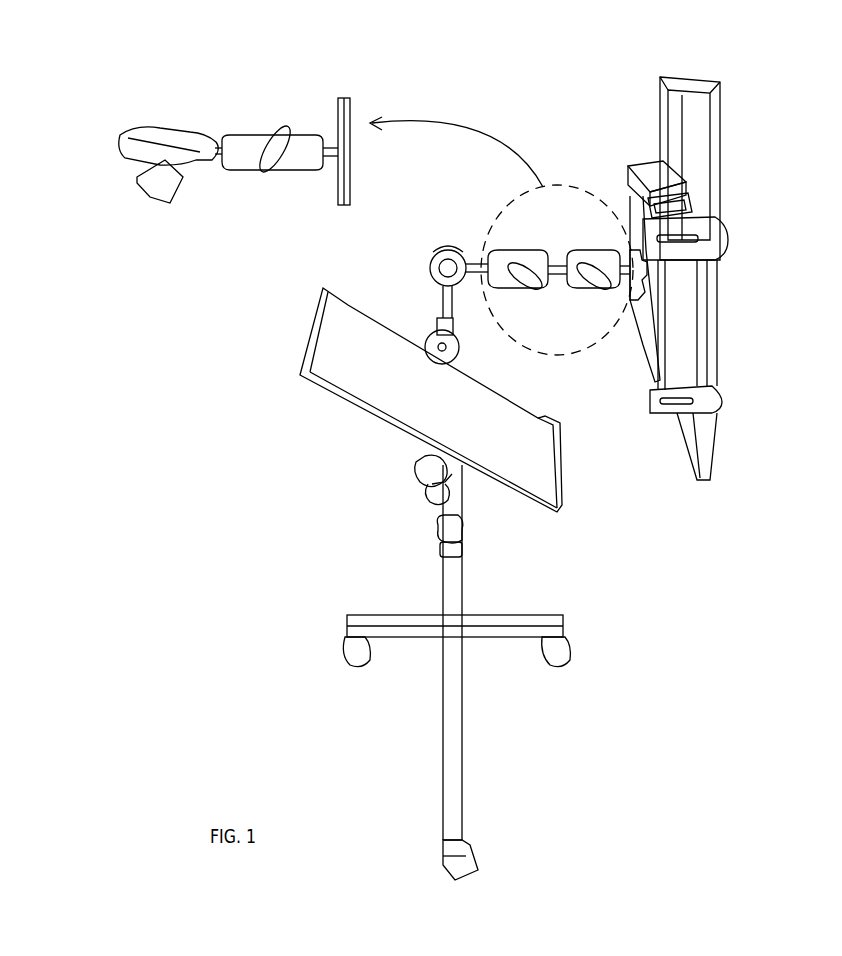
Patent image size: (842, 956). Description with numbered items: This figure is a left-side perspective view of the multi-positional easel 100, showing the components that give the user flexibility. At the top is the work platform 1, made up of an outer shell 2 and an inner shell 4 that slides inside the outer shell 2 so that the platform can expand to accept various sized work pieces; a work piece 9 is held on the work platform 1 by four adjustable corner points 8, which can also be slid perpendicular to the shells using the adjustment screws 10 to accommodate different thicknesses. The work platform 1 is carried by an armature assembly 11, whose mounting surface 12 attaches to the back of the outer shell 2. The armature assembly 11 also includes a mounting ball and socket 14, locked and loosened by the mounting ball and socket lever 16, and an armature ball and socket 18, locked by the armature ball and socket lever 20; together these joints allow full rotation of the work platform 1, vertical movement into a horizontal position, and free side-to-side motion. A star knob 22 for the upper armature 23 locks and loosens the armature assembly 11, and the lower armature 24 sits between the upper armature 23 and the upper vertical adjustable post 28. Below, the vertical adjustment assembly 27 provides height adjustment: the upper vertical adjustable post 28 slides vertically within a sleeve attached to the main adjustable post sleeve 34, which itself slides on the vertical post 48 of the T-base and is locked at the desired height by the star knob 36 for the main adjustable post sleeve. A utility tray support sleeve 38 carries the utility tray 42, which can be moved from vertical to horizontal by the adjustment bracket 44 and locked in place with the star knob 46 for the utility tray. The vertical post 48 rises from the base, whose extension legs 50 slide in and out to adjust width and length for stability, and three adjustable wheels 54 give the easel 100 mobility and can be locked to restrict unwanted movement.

The work platform 1 is at (612, 178).
The outer shell 2 is at (652, 170).
The inner shell 4 is at (718, 322).
The adjustable corner points 8 is at (728, 260).
The work piece 9 is at (722, 120).
The adjustment screws 10 is at (725, 240).
The armature assembly 11 is at (545, 232).
The mounting surface 12 is at (352, 145).
The mounting ball and socket 14 is at (260, 135).
The mounting ball and socket lever 16 is at (268, 170).
The armature ball and socket 18 is at (130, 135).
The armature ball and socket lever 20 is at (160, 190).
The star knob for upper armature 22 is at (450, 250).
The upper armature 23 is at (470, 250).
The lower armature 24 is at (443, 290).
The vertical adjustment assembly 27 is at (426, 535).
The upper vertical adjustable post 28 is at (438, 338).
The main adjustable post sleeve 34 is at (465, 530).
The star knob for main adjustable post sleeve 36 is at (465, 552).
The utility tray support sleeve 38 is at (425, 500).
The utility tray 42 is at (525, 410).
The adjustment bracket for utility tray 44 is at (420, 465).
The star knob for utility tray 46 is at (420, 480).
The vertical post 48 is at (462, 610).
The extension legs 50 is at (350, 612).
The wheels 54 is at (343, 652).
The easel 100 is at (654, 773).